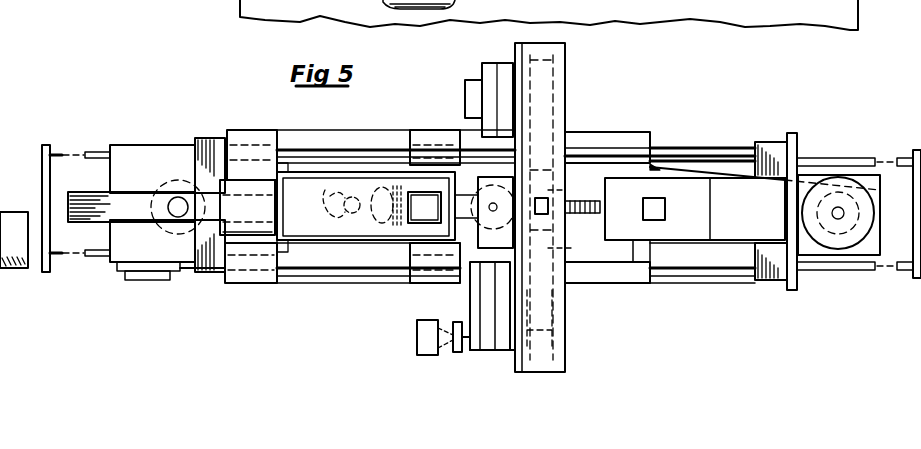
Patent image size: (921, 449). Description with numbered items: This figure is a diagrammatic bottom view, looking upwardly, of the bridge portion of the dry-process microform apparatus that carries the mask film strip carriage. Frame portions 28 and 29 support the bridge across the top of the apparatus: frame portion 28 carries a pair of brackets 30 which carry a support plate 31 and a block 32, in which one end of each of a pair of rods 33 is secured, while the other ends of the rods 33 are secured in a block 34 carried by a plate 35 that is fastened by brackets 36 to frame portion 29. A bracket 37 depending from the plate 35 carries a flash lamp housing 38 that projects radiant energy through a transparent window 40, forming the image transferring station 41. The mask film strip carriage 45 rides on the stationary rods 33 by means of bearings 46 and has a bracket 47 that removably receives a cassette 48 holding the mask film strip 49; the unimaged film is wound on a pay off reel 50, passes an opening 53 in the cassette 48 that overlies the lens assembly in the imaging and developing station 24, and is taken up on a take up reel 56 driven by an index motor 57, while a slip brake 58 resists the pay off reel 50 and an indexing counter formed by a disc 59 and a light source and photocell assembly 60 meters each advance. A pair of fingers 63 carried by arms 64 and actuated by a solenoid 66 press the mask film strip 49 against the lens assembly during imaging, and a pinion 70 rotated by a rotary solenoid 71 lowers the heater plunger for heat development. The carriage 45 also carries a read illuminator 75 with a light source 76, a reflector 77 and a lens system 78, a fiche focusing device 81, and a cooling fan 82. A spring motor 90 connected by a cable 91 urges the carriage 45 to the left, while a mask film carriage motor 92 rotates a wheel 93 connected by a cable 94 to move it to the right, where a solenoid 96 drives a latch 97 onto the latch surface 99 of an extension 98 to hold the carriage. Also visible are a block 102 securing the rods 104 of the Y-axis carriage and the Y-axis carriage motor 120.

The imaging and developing station 24 is at (540, 373).
The frame portion 28 is at (42, 163).
The frame portion 29 is at (915, 165).
The brackets 30 is at (92, 152).
The support plate 31 is at (127, 145).
The block 32 is at (205, 140).
The rods 33 is at (300, 150).
The block 34 is at (768, 142).
The plate 35 is at (805, 248).
The brackets 36 is at (820, 158).
The bracket 37 is at (740, 245).
The flash lamp housing 38 is at (686, 245).
The transparent window 40 is at (667, 208).
The image transferring station 41 is at (657, 98).
The mask film strip carriage 45 is at (345, 133).
The bearings 46 is at (262, 133).
The bracket 47 is at (518, 50).
The cassette 48 is at (563, 47).
The mask film strip 49 is at (552, 210).
The pay off reel 50 is at (566, 70).
The opening 53 is at (542, 198).
The take up reel 56 is at (566, 338).
The index motor 57 is at (482, 298).
The slip brake 58 is at (483, 82).
The disc 59 is at (457, 353).
The light source and photocell assembly 60 is at (417, 350).
The fingers 63 is at (566, 190).
The arms 64 is at (488, 168).
The solenoid 66 is at (486, 202).
The pinion 70 is at (605, 193).
The rotary solenoid 71 is at (625, 270).
The read illuminator 75 is at (323, 242).
The light source 76 is at (335, 205).
The reflector 77 is at (321, 196).
The lens system 78 is at (357, 207).
The fiche focusing device 81 is at (432, 224).
The fan 82 is at (236, 180).
The spring motor 90 is at (132, 280).
The cable 91 is at (185, 272).
The mask film carriage motor 92 is at (878, 226).
The wheel 93 is at (878, 202).
The cable 94 is at (683, 167).
The solenoid 96 is at (172, 180).
The latch 97 is at (152, 207).
The extension 98 is at (100, 222).
The latch surface 99 is at (68, 205).
The block 102 is at (3, 268).
The rods 104 is at (11, 198).
The Y-axis carriage motor 120 is at (0, 360).